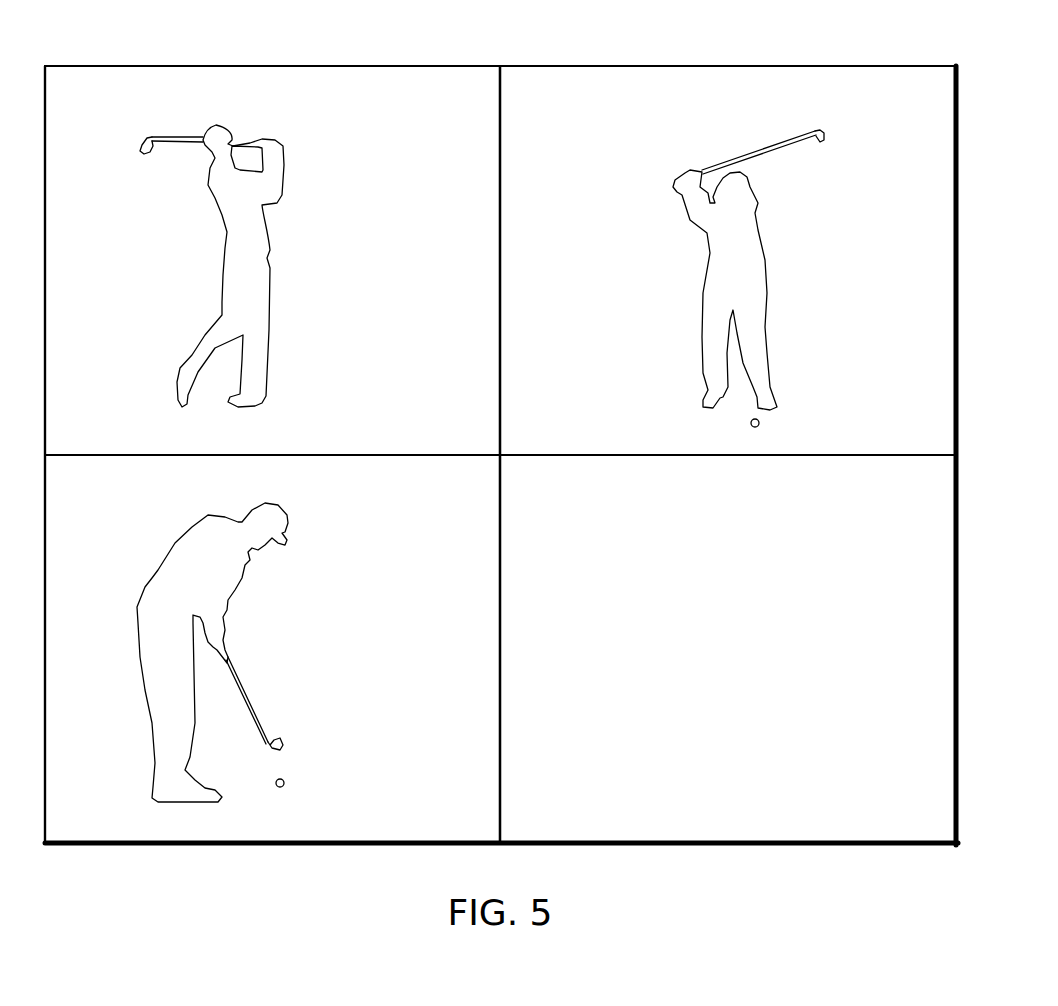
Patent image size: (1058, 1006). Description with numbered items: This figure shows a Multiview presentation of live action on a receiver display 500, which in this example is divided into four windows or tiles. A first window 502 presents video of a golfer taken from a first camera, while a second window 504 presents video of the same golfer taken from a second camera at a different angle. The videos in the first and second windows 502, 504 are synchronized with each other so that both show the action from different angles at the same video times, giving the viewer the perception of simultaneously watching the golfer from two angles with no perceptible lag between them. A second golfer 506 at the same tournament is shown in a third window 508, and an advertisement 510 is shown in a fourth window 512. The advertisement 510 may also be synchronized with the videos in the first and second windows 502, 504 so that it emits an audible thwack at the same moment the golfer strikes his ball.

The display 500 is at (490, 66).
The first window 502 is at (277, 81).
The second window 504 is at (732, 82).
The second golfer 506 is at (247, 578).
The third window 508 is at (265, 817).
The advertisement 510 is at (841, 644).
The fourth window 512 is at (722, 820).